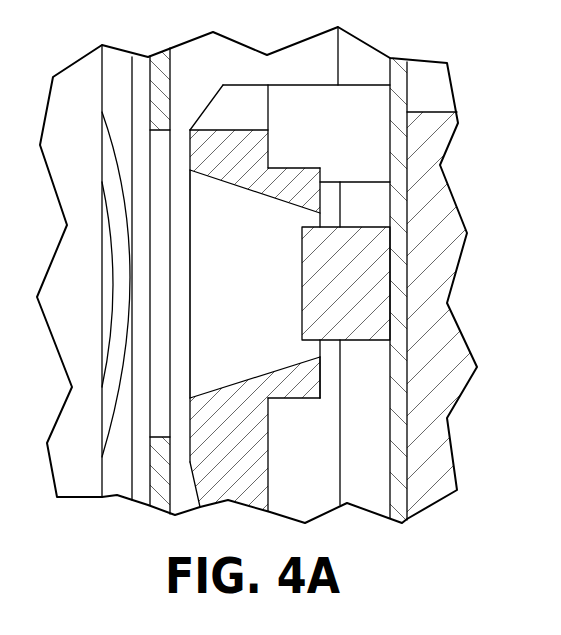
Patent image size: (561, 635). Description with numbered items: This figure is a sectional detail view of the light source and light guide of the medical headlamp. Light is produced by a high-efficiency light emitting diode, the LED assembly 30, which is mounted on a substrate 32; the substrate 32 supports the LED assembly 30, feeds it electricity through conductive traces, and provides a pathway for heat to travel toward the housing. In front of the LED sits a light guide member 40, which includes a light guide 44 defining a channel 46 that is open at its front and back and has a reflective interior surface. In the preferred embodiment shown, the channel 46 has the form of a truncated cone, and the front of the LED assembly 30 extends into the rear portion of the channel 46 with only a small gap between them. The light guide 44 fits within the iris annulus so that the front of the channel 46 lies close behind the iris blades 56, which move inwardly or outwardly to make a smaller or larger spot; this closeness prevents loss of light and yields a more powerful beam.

The LED assembly 30 is at (361, 298).
The substrate 32 is at (407, 83).
The light guide member 40 is at (305, 168).
The light guide 44 is at (238, 190).
The channel 46 is at (259, 298).
The iris blades 56 is at (172, 65).